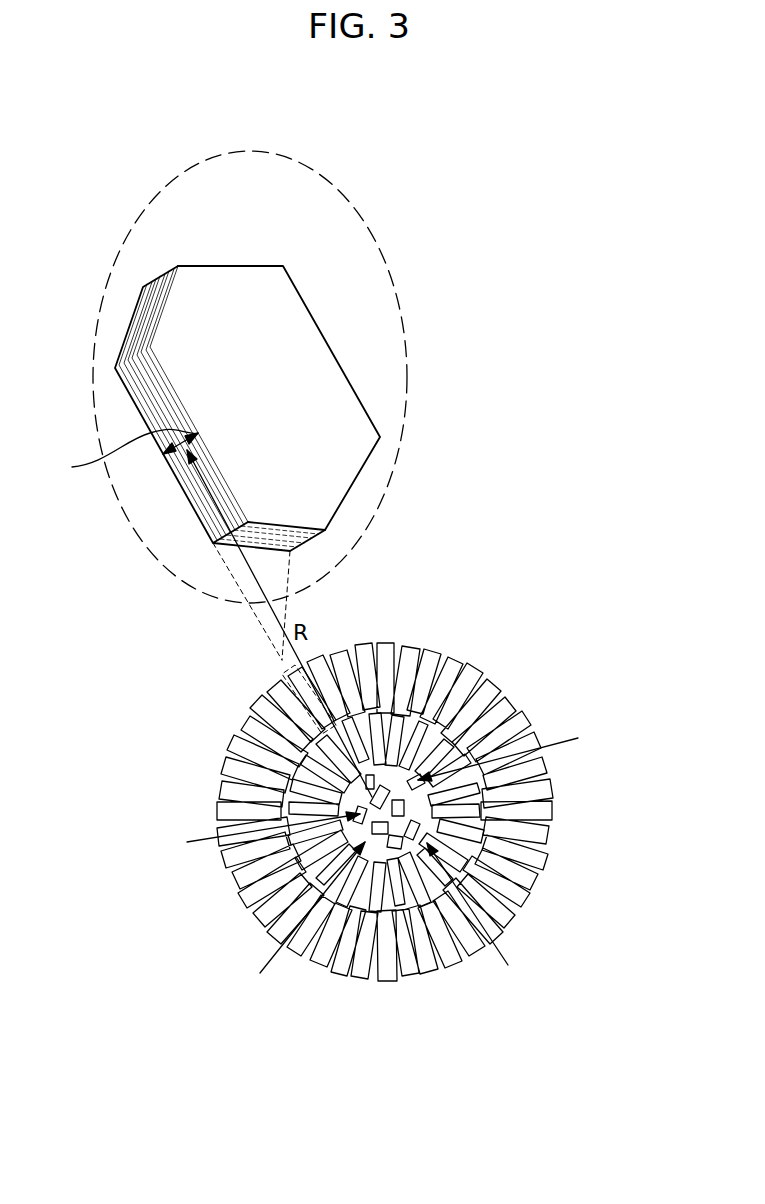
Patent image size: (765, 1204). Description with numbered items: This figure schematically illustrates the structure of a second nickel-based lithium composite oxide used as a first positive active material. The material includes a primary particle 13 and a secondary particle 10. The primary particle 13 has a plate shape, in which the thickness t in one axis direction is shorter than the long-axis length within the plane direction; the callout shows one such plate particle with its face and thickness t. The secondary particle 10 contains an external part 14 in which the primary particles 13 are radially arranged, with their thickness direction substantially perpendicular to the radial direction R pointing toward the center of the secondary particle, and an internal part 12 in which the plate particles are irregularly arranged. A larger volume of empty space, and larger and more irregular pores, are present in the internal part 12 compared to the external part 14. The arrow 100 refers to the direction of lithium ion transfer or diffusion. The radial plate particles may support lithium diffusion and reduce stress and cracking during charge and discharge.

The secondary particle 10 is at (411, 818).
The internal part 12 is at (488, 803).
The primary particle 13 is at (330, 348).
The external part 14 is at (527, 718).
The arrow indicating direction of Li ion transfer 100 is at (376, 757).